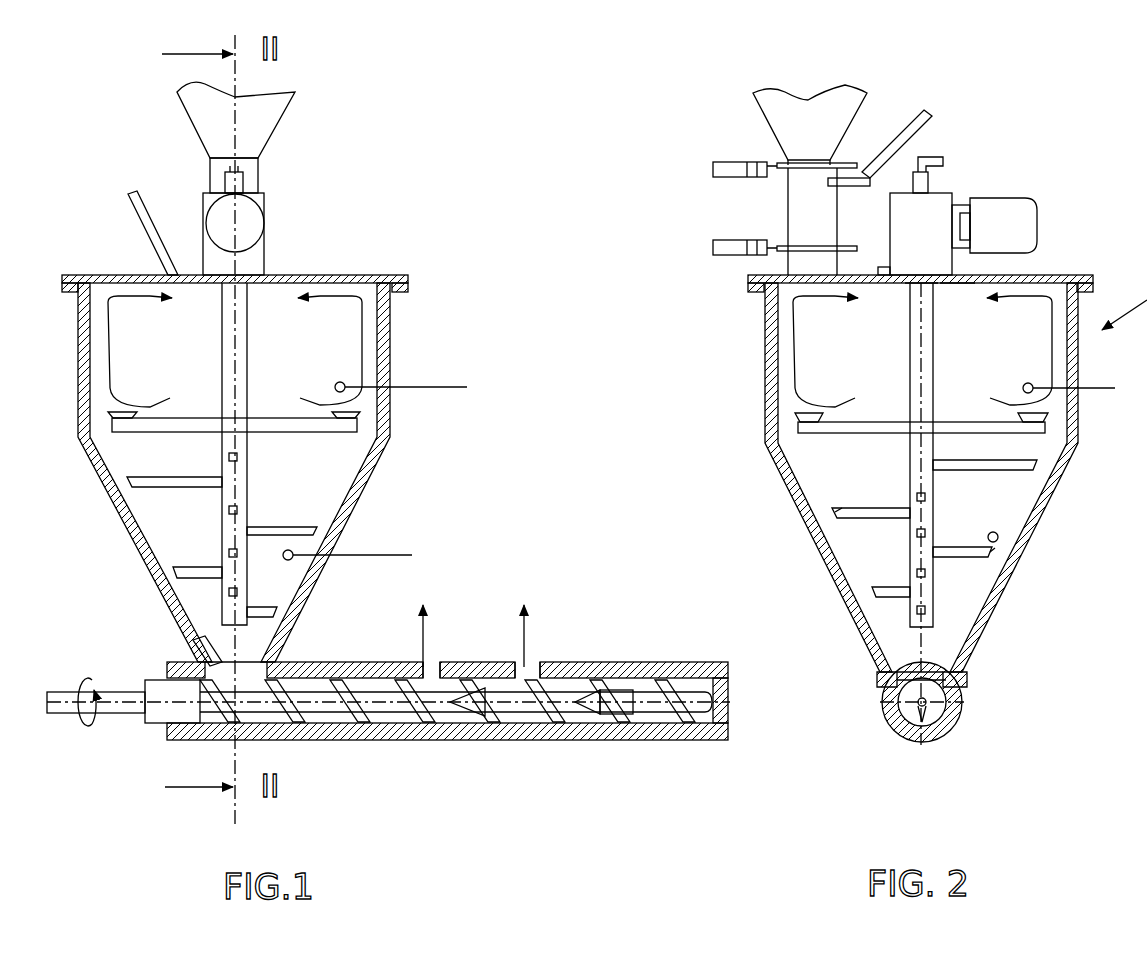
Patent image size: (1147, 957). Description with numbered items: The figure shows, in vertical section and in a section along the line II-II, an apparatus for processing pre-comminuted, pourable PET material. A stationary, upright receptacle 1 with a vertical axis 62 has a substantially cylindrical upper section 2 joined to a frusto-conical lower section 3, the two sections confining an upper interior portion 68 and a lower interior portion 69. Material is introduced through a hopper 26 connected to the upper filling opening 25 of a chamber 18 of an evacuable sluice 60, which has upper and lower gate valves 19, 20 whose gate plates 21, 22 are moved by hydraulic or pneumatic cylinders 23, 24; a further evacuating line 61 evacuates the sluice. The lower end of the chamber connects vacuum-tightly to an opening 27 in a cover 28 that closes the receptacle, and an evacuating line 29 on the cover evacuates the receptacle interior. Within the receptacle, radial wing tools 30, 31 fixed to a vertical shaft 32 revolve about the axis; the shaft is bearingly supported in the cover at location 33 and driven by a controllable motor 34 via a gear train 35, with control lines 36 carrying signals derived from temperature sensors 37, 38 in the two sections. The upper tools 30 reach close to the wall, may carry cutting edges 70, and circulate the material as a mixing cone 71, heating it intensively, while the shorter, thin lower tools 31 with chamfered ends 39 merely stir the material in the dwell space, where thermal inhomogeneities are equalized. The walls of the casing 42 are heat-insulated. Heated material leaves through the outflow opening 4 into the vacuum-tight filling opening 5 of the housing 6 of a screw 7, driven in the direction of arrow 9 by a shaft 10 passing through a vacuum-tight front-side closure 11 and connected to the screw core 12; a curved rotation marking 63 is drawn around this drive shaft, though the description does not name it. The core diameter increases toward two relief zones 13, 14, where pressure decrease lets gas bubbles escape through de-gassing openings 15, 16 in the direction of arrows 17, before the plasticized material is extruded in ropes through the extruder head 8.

In FIG. 1, the receptacle 1 is at (259, 472).
In FIG. 2, the receptacle 1 is at (892, 477).
In FIG. 1, the cylindrical upper section 2 is at (256, 472).
In FIG. 2, the cylindrical upper section 2 is at (892, 477).
In FIG. 1, the frusto-conical lower section 3 is at (339, 568).
In FIG. 2, the frusto-conical lower section 3 is at (1037, 535).
In FIG. 1, the outflow opening 4 is at (240, 662).
In FIG. 2, the outflow opening 4 is at (930, 660).
In FIG. 1, the filling opening 5 is at (220, 670).
In FIG. 2, the filling opening 5 is at (930, 678).
In FIG. 1, the housing 6 is at (447, 676).
In FIG. 2, the housing 6 is at (883, 717).
In FIG. 1, the screw 7 is at (345, 728).
In FIG. 2, the screw 7 is at (917, 716).
In FIG. 1, the extruder head 8 is at (705, 665).
In FIG. 1, the arrow 9 is at (88, 701).
In FIG. 1, the shaft 10 is at (110, 690).
In FIG. 1, the front-side closure 11 is at (147, 688).
In FIG. 1, the core 12 is at (456, 741).
In FIG. 2, the core 12 is at (926, 704).
In FIG. 1, the relief zone 13 is at (434, 722).
In FIG. 1, the relief zone 14 is at (558, 718).
In FIG. 1, the de-gassing opening 15 is at (430, 665).
In FIG. 1, the de-gassing opening 16 is at (560, 655).
In FIG. 1, the arrows 17 is at (426, 655).
In FIG. 2, the chamber 18 is at (771, 221).
In FIG. 2, the valve 19 is at (758, 149).
In FIG. 2, the valve 20 is at (760, 264).
In FIG. 2, the gate plate 21 is at (813, 165).
In FIG. 2, the gate plate 22 is at (812, 221).
In FIG. 2, the cylinder 23 is at (725, 168).
In FIG. 2, the cylinder 24 is at (725, 249).
In FIG. 2, the filling opening 25 is at (835, 163).
In FIG. 1, the hopper 26 is at (245, 128).
In FIG. 2, the hopper 26 is at (847, 98).
In FIG. 2, the opening 27 is at (812, 284).
In FIG. 1, the cover 28 is at (255, 284).
In FIG. 2, the cover 28 is at (957, 284).
In FIG. 1, the evacuating line 29 is at (150, 240).
In FIG. 1, the tools 30 is at (197, 418).
In FIG. 2, the tools 30 is at (885, 433).
In FIG. 1, the tools 31 is at (165, 485).
In FIG. 2, the tools 31 is at (958, 548).
In FIG. 2, the shaft 32 is at (925, 405).
In FIG. 2, the location 33 is at (908, 284).
In FIG. 1, the motor 34 is at (245, 222).
In FIG. 2, the motor 34 is at (998, 225).
In FIG. 1, the gear train 35 is at (255, 262).
In FIG. 2, the gear train 35 is at (910, 237).
In FIG. 1, the control lines 36 is at (240, 166).
In FIG. 2, the control lines 36 is at (935, 155).
In FIG. 1, the temperature sensor 37 is at (420, 387).
In FIG. 2, the temperature sensor 37 is at (1084, 388).
In FIG. 1, the temperature sensor 38 is at (373, 555).
In FIG. 2, the temperature sensor 38 is at (998, 541).
In FIG. 2, the ends 39 is at (830, 513).
In FIG. 1, the casing 42 is at (105, 488).
In FIG. 2, the casing 42 is at (833, 547).
In FIG. 2, the sluice 60 is at (785, 195).
In FIG. 2, the evacuating line 61 is at (903, 142).
In FIG. 1, the vertical axis 62 is at (240, 490).
In FIG. 1, the direction of rotation 63 is at (80, 708).
In FIG. 1, the upper interior portion 68 is at (234, 376).
In FIG. 1, the lower interior portion 69 is at (130, 472).
In FIG. 1, the cutting edges 70 is at (115, 413).
In FIG. 2, the cutting edges 70 is at (808, 415).
In FIG. 1, the mixing cone 71 is at (105, 330).
In FIG. 2, the mixing cone 71 is at (793, 328).